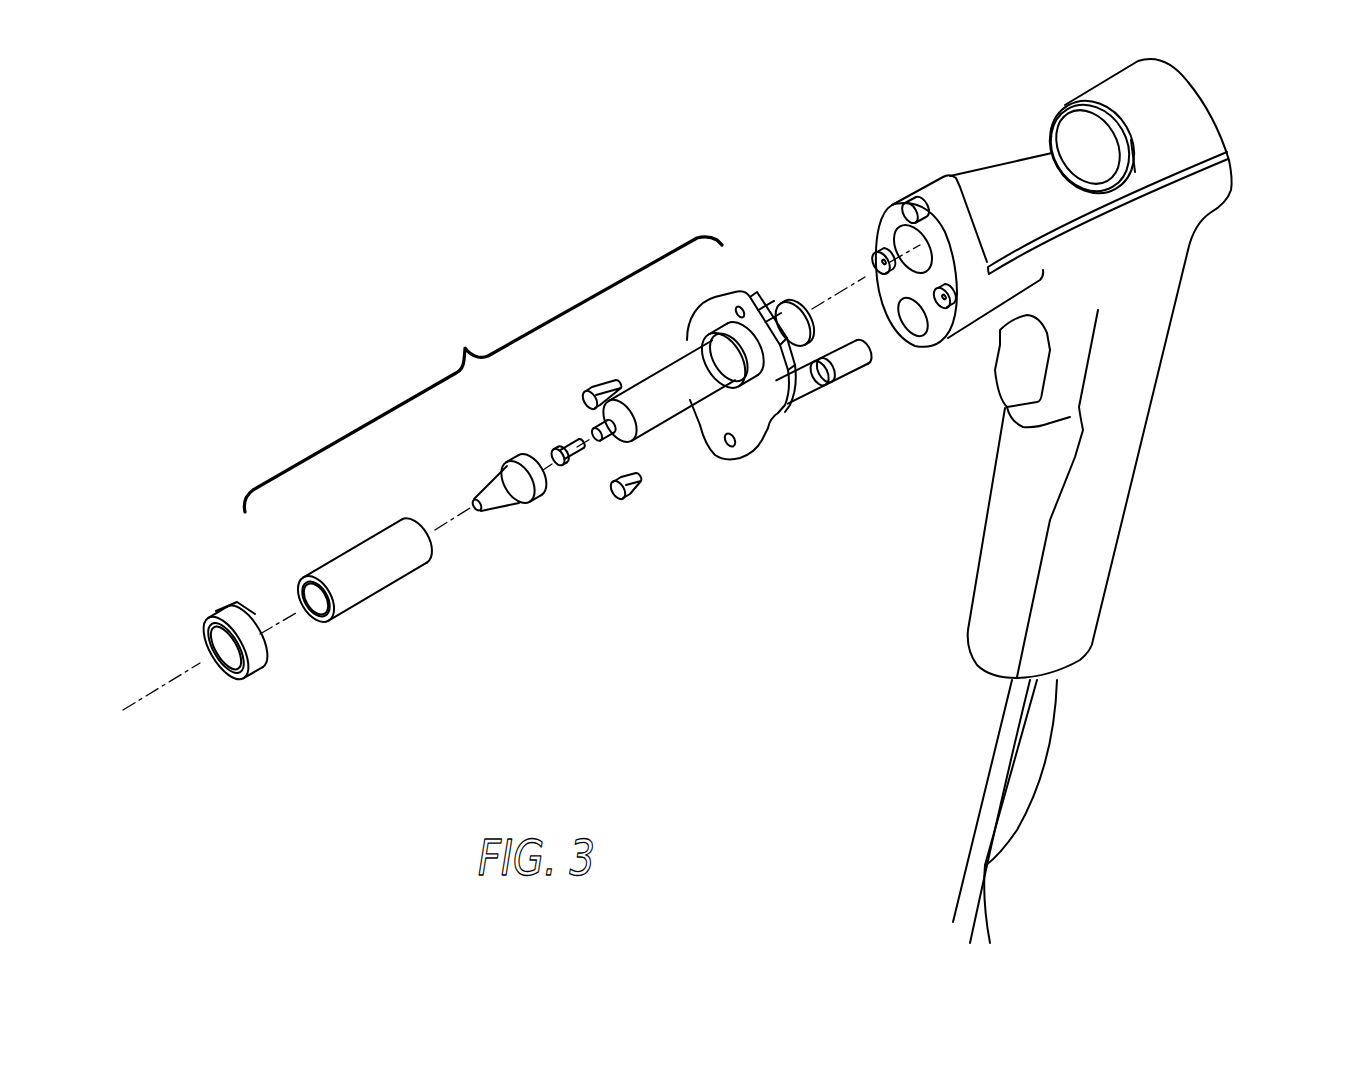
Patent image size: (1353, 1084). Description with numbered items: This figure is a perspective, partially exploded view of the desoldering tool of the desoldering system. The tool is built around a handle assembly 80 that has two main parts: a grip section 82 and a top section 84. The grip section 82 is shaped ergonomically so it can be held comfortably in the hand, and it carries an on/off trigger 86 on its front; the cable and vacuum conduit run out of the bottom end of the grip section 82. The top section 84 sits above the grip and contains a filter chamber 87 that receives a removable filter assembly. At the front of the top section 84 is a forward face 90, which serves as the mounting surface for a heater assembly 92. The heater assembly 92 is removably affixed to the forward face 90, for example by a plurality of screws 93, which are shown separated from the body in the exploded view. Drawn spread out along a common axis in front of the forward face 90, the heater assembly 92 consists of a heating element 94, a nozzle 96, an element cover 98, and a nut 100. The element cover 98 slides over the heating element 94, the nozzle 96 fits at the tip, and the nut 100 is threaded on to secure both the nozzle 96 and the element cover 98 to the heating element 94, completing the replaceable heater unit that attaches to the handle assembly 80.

The handle assembly 80 is at (1180, 461).
The grip section 82 is at (1132, 587).
The top section 84 is at (918, 172).
The on/off trigger 86 is at (1012, 382).
The filter chamber 87 is at (1002, 190).
The forward face 90 is at (927, 338).
The heater assembly 92 is at (483, 374).
The screws 93 is at (627, 488).
The heating element 94 is at (657, 413).
The nozzle 96 is at (513, 482).
The element cover 98 is at (377, 567).
The nut 100 is at (220, 612).